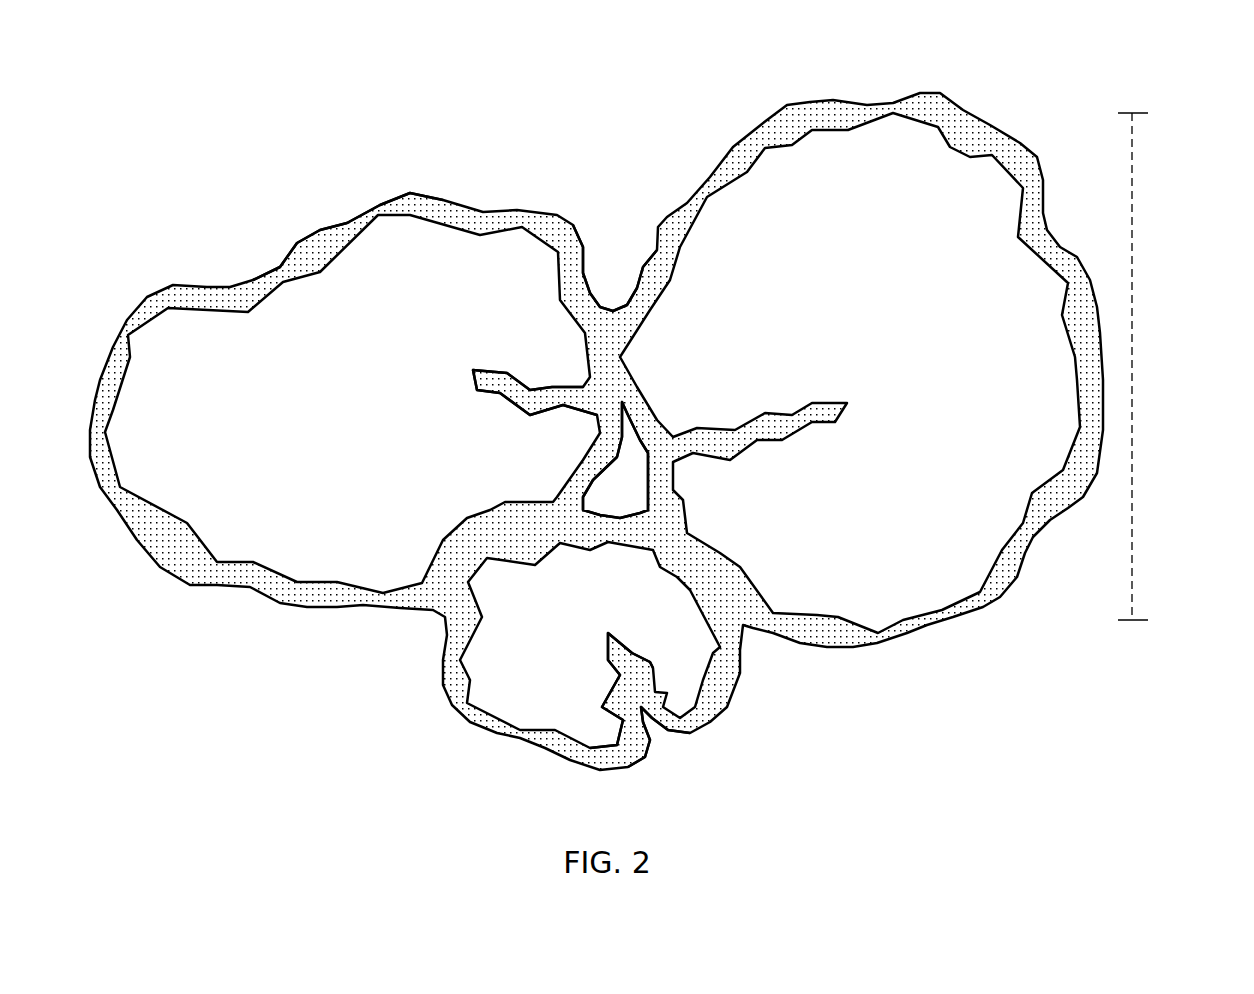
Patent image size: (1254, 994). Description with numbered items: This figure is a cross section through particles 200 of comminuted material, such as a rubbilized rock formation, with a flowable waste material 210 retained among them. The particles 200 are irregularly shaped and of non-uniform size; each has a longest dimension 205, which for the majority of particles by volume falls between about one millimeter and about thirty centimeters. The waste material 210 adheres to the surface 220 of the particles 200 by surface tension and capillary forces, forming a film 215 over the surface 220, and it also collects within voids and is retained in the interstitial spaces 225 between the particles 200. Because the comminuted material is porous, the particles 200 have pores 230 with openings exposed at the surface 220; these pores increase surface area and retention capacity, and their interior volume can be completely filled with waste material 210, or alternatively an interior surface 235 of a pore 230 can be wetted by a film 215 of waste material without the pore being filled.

The particles 200 is at (835, 163).
The longest dimension 205 is at (1132, 343).
The flowable waste material 210 is at (580, 237).
The film 215 is at (518, 235).
The surface 220 is at (343, 243).
The interstitial spaces 225 is at (638, 500).
The pores 230 is at (660, 748).
The interior surface 235 is at (613, 700).